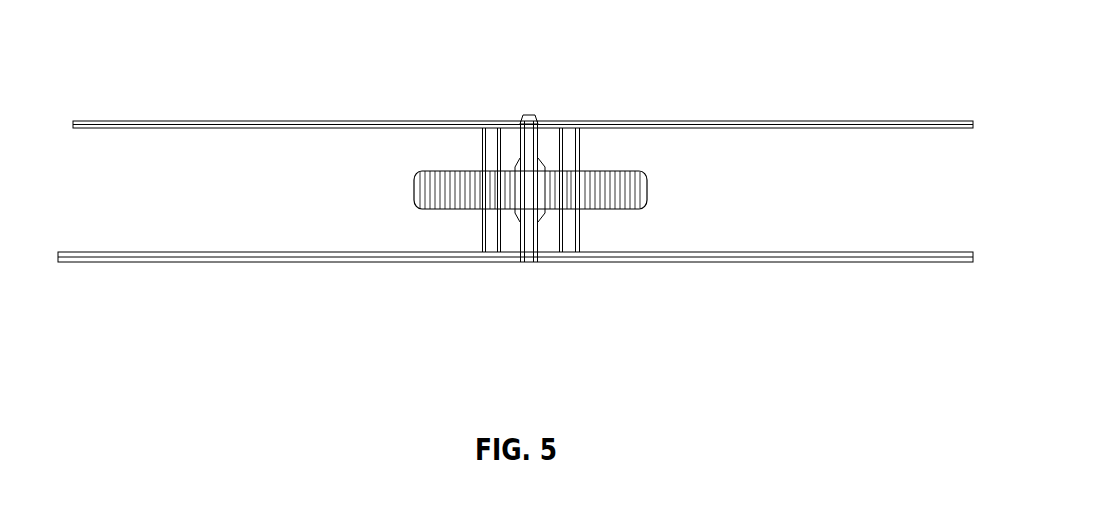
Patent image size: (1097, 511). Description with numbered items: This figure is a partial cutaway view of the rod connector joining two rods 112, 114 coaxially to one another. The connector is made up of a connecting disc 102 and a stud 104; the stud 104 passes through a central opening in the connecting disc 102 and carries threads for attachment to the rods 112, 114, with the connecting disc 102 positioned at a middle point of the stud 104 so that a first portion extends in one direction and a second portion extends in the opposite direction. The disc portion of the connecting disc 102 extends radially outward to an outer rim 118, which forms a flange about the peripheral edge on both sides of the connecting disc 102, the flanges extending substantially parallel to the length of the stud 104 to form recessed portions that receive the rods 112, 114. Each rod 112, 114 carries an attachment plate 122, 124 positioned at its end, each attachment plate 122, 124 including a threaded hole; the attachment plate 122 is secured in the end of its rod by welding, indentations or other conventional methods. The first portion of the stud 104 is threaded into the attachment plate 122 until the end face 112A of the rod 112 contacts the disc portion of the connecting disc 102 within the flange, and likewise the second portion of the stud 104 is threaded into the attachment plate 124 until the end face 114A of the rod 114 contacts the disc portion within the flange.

The connecting disc 102 is at (553, 194).
The stud 104 is at (443, 188).
The rod 112 is at (310, 238).
The end face of the rod 112A is at (525, 253).
The rod 114 is at (803, 253).
The end face of the rod 114A is at (533, 253).
The outer rim 118 is at (528, 118).
The attachment plate 122 is at (493, 243).
The attachment plate 124 is at (578, 233).